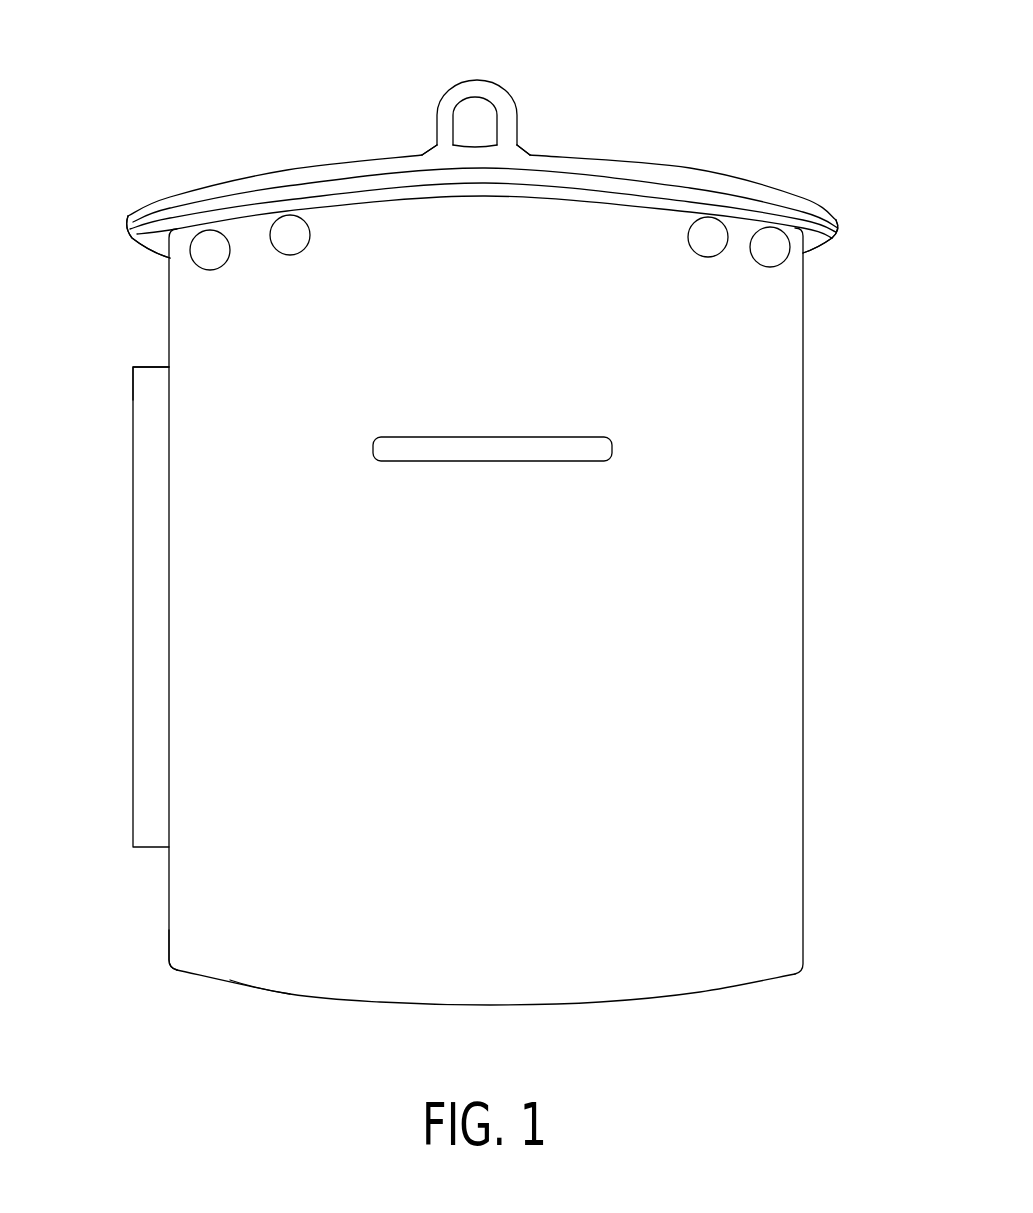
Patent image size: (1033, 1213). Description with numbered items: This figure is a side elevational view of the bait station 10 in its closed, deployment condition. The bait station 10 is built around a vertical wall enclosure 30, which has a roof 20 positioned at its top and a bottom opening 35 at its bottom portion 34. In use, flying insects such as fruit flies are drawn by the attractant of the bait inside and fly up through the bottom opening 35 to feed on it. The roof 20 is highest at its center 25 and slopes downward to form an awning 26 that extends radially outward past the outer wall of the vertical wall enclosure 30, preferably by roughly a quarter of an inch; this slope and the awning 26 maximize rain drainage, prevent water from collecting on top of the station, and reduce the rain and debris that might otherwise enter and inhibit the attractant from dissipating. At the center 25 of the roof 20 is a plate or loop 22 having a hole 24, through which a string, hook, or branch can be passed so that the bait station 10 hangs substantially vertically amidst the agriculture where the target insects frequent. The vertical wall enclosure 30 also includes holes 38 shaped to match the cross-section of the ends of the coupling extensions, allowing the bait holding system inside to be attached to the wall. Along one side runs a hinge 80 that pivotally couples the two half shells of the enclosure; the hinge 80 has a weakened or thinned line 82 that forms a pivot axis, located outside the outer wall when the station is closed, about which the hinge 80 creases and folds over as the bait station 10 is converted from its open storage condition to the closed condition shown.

The bait station 10 is at (741, 82).
The roof 20 is at (302, 165).
The loop 22 is at (478, 82).
The hole 24 is at (462, 115).
The center 25 is at (518, 138).
The awning 26 is at (133, 236).
The vertical wall enclosure 30 is at (805, 452).
The bottom portion 34 is at (168, 952).
The bottom opening 35 is at (285, 998).
The holes 38 is at (420, 452).
The hinge 80 is at (140, 366).
The weakened line 82 is at (133, 548).